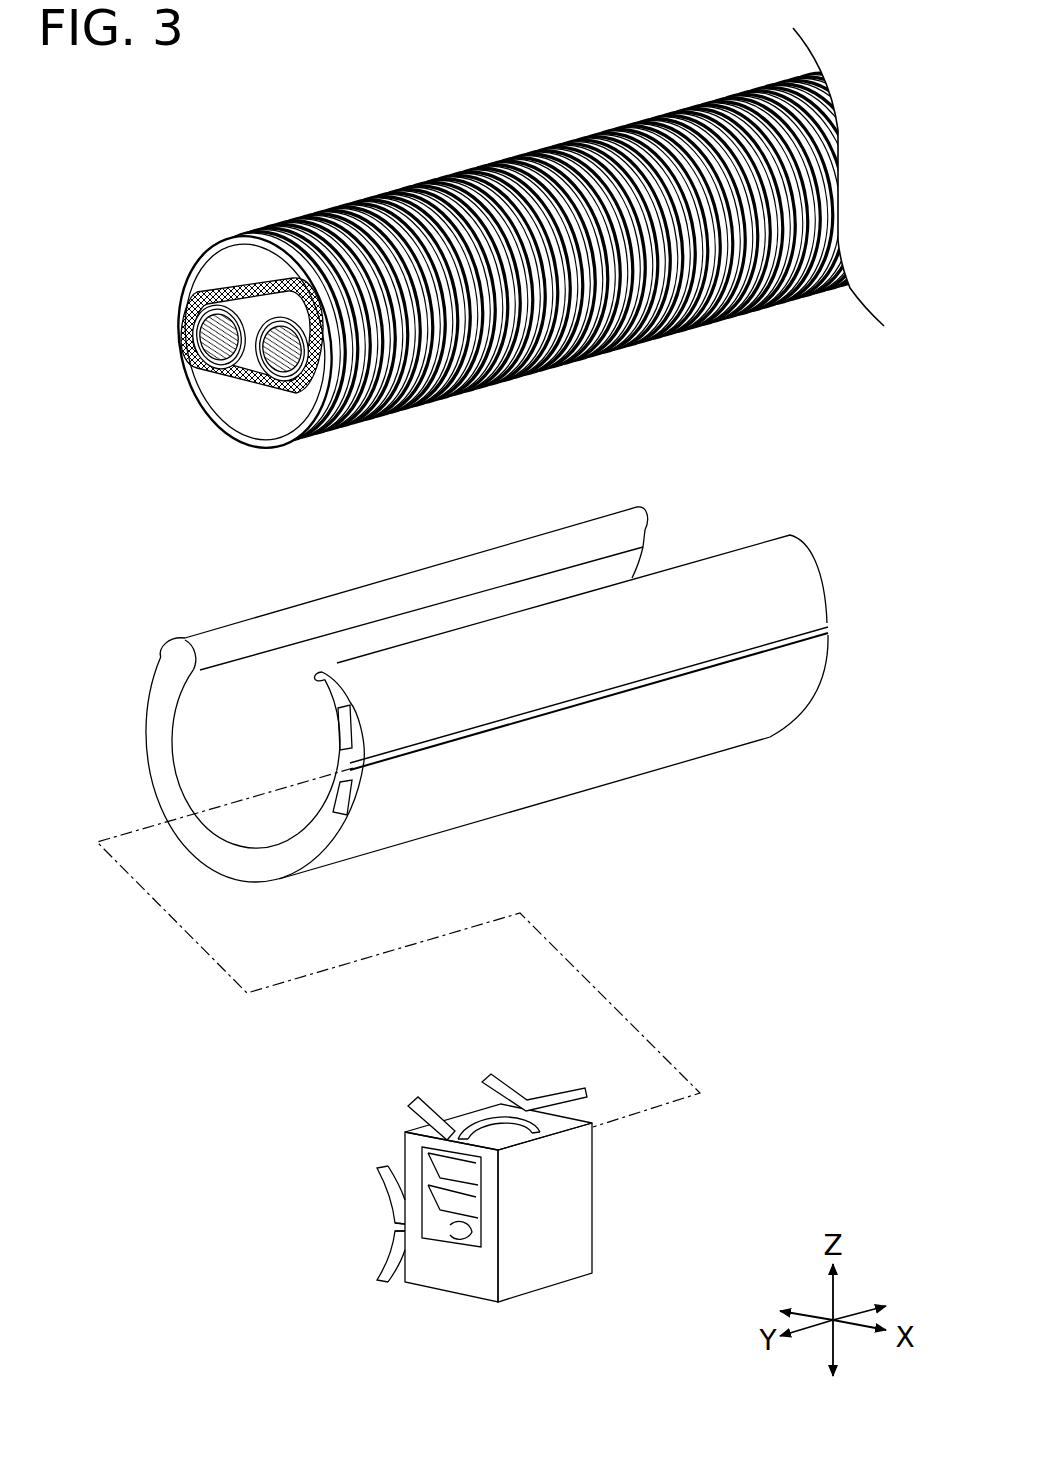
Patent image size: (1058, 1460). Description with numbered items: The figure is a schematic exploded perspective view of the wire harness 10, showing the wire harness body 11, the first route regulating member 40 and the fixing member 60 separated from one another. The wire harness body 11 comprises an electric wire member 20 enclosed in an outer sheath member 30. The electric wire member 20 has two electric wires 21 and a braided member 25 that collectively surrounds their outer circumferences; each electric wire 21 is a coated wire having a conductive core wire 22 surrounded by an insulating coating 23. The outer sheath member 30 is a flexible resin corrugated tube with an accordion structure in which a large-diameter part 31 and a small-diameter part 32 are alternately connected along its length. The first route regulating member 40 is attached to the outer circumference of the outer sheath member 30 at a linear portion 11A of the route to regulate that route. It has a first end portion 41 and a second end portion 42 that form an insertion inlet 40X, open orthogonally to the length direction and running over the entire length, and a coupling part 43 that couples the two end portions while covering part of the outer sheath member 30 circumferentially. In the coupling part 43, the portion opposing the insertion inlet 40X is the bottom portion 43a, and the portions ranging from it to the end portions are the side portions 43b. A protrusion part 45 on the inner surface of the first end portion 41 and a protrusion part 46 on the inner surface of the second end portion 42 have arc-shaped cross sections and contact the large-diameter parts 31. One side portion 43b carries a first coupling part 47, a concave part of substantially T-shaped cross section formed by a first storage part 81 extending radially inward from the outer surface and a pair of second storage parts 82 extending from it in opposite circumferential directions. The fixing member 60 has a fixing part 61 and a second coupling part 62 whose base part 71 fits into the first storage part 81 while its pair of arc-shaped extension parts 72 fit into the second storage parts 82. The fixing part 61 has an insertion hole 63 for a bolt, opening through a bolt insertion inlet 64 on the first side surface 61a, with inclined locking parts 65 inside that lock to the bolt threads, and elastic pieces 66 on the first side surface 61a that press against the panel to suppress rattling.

The wire harness 10 is at (530, 280).
The wire harness body 11 is at (542, 245).
The linear portion 11A is at (606, 318).
The electric wire member 20 is at (238, 330).
The electric wire 21 is at (234, 353).
The core wire 22 is at (203, 345).
The insulating coating 23 is at (213, 378).
The braided member 25 is at (285, 270).
The outer sheath member 30 is at (548, 258).
The large-diameter part 31 is at (547, 173).
The small-diameter part 32 is at (590, 190).
The first route regulating member 40 is at (469, 812).
The insertion inlet 40X is at (513, 608).
The first end portion 41 is at (452, 567).
The second end portion 42 is at (708, 557).
The coupling part 43 is at (530, 812).
The bottom portion 43a is at (227, 855).
The side portion 43b is at (155, 746).
The protrusion part 45 is at (206, 663).
The protrusion part 46 is at (320, 682).
The first coupling part 47 is at (333, 790).
The fixing member 60 is at (481, 1169).
The fixing part 61 is at (523, 1203).
The first side surface 61a is at (480, 1110).
The second coupling part 62 is at (390, 1222).
The insertion hole 63 is at (458, 1230).
The bolt insertion inlet 64 is at (505, 1133).
The locking part 65 is at (435, 1230).
The elastic piece 66 is at (422, 1098).
The base part 71 is at (397, 1228).
The extension part 72 is at (380, 1183).
The first storage part 81 is at (480, 732).
The second storage part 82 is at (353, 732).